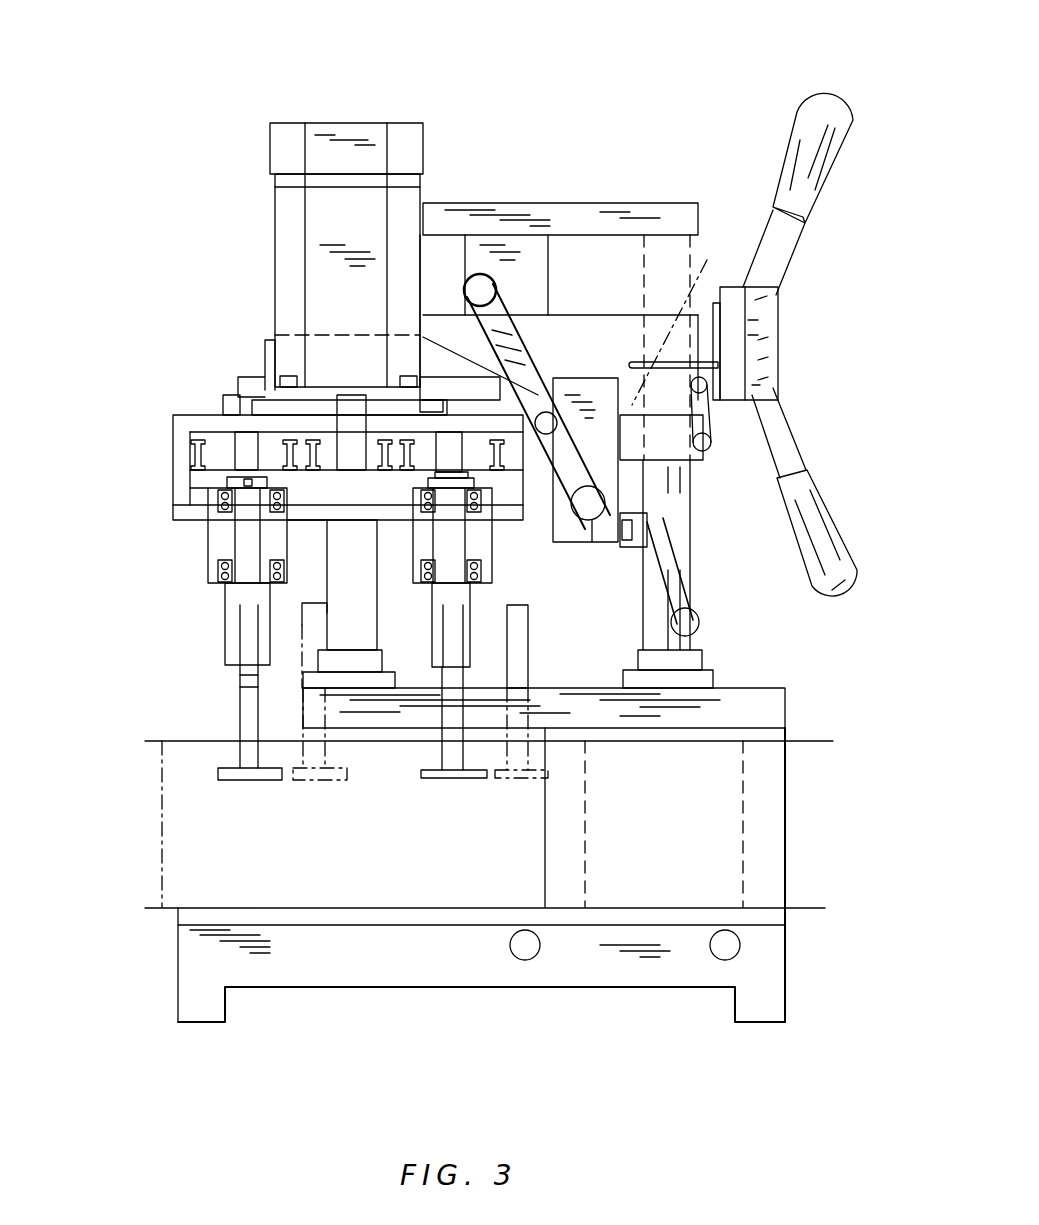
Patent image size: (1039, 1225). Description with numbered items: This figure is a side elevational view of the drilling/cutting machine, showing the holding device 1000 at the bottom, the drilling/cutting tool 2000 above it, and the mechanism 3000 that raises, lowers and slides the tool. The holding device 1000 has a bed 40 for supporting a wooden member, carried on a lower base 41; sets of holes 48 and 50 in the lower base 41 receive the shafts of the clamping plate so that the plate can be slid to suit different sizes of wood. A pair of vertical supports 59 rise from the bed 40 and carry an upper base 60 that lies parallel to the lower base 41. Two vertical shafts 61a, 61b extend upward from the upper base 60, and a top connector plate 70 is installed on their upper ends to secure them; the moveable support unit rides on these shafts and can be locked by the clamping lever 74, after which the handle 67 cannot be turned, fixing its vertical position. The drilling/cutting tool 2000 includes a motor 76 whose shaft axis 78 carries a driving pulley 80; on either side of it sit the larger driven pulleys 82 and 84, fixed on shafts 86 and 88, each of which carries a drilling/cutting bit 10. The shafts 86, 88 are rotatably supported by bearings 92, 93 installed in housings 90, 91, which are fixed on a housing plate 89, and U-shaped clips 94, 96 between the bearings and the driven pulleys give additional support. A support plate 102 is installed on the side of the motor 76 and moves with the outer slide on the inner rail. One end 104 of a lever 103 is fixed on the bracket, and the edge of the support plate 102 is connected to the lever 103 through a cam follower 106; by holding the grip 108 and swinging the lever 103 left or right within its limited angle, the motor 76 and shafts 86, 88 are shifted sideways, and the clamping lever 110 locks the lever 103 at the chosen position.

The drilling/cutting tool 2000 is at (200, 148).
The holding device 1000 is at (134, 896).
The mechanism 3000 is at (800, 304).
The handle 67 is at (812, 100).
The motor 76 is at (320, 272).
The top connector plate 70 is at (665, 215).
The support plate 102 is at (437, 335).
The grip 108 is at (480, 290).
The lever 103 is at (517, 300).
The cam follower 106 is at (548, 410).
The end of lever 104 is at (600, 505).
The driven pulley 84 is at (487, 453).
The clamping lever 74 is at (708, 418).
The clamping lever 110 is at (667, 568).
The vertical shaft 61a is at (653, 600).
The shaft axis 78 is at (350, 405).
The driving pulley 80 is at (325, 405).
The driven pulley 82 is at (215, 440).
The U-shaped clip 94 is at (240, 480).
The housing plate 89 is at (175, 505).
The bearing 92 is at (213, 548).
The housing 90 is at (213, 560).
The shaft 86 is at (243, 598).
The U-shaped clip 96 is at (380, 482).
The housing 91 is at (420, 540).
The bearing 93 is at (473, 538).
The shaft 88 is at (460, 595).
The vertical shaft 61b is at (330, 618).
The drilling/cutting bit 10 is at (263, 794).
The upper base 60 is at (775, 705).
The vertical support 59 is at (765, 803).
The bed 40 is at (775, 920).
The lower base 41 is at (560, 975).
The holes 48 is at (520, 958).
The holes 50 is at (720, 958).